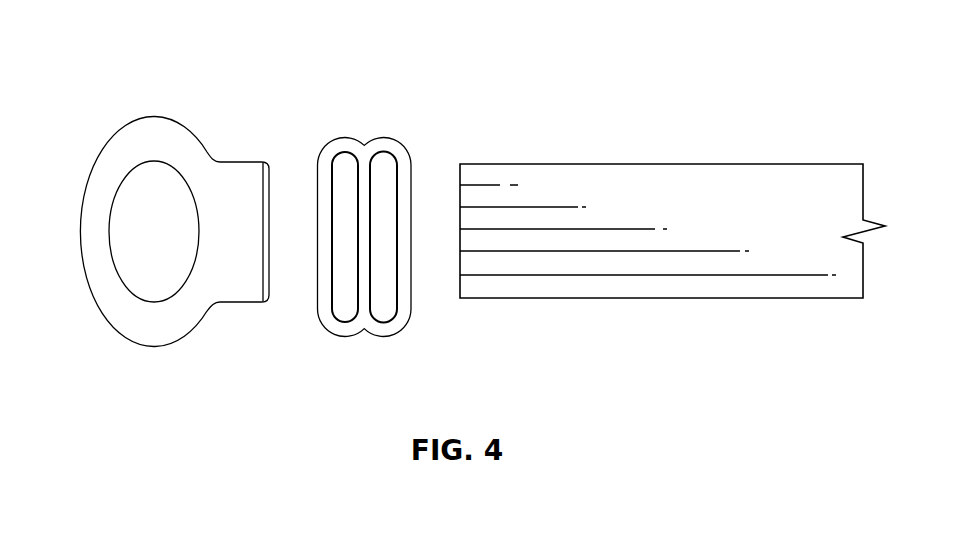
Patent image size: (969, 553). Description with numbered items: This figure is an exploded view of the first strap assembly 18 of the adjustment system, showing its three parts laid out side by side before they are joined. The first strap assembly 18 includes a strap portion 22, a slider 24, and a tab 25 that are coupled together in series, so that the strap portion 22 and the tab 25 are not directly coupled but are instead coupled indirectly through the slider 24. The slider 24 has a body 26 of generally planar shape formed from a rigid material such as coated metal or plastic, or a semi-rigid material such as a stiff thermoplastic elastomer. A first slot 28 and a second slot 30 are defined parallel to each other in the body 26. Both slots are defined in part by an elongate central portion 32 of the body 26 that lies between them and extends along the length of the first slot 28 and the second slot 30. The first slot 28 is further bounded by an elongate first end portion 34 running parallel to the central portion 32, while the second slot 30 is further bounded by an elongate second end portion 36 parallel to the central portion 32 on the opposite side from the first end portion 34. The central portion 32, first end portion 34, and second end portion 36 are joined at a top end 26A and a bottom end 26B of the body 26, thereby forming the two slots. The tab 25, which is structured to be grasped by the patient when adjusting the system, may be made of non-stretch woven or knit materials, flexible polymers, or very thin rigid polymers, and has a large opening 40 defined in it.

The first strap assembly 18 is at (130, 50).
The strap portion 22 is at (662, 139).
The slider 24 is at (369, 103).
The tab 25 is at (180, 97).
The body 26 is at (390, 148).
The top end 26A is at (383, 116).
The bottom end 26B is at (364, 349).
The first slot 28 is at (342, 308).
The second slot 30 is at (385, 302).
The central portion 32 is at (363, 177).
The first end portion 34 is at (323, 214).
The second end portion 36 is at (403, 227).
The large opening 40 is at (136, 239).